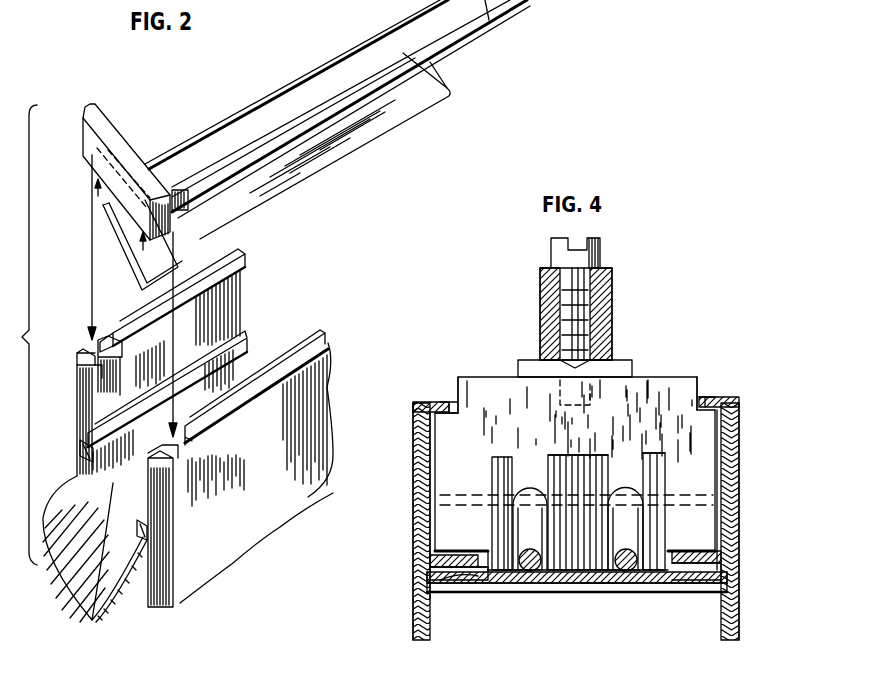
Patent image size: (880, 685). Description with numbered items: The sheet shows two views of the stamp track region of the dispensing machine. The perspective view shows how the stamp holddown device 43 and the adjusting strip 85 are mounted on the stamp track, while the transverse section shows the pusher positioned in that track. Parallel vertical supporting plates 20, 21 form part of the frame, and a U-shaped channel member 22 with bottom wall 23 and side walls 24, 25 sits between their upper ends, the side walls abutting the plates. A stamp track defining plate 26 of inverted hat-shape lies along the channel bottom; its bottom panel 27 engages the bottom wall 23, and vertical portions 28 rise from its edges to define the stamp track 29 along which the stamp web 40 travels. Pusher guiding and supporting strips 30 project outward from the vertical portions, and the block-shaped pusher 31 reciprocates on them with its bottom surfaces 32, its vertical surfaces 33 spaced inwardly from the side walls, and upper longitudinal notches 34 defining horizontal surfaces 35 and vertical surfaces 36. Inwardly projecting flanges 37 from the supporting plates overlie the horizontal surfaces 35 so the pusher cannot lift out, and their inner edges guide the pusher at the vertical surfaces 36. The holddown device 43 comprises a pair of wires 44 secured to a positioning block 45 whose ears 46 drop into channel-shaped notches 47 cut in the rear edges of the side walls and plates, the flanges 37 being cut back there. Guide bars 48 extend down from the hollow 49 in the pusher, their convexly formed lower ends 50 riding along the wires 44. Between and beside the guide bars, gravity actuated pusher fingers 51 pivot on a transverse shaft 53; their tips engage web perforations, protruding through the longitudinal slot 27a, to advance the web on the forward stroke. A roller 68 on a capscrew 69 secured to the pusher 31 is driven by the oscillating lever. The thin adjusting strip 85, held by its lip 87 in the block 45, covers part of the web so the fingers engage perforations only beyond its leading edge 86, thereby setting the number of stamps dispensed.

In FIG. 2, the supporting plate 20 is at (76, 402).
In FIG. 4, the supporting plate 20 is at (422, 548).
In FIG. 2, the supporting plate 21 is at (183, 592).
In FIG. 4, the supporting plate 21 is at (740, 522).
In FIG. 4, the U-shaped channel member 22 is at (512, 594).
In FIG. 4, the bottom wall 23 is at (548, 584).
In FIG. 4, the side wall 24 is at (432, 470).
In FIG. 4, the side wall 25 is at (739, 470).
In FIG. 4, the stamp track defining plate 26 is at (460, 582).
In FIG. 4, the bottom panel 27 is at (626, 582).
In FIG. 4, the longitudinal slot 27a is at (606, 584).
In FIG. 4, the vertical portions 28 is at (440, 580).
In FIG. 4, the stamp track 29 is at (486, 546).
In FIG. 4, the pusher guiding and supporting strips 30 is at (445, 566).
In FIG. 4, the stamp web feeder or pusher 31 is at (656, 368).
In FIG. 4, the bottom surfaces 32 is at (458, 548).
In FIG. 4, the vertically extending surfaces 33 is at (416, 448).
In FIG. 4, the upper longitudinal notches 34 is at (452, 393).
In FIG. 4, the horizontal surfaces 35 is at (447, 402).
In FIG. 4, the vertical surfaces 36 is at (455, 378).
In FIG. 2, the flanges 37 is at (238, 257).
In FIG. 4, the flanges 37 is at (418, 403).
In FIG. 4, the stamp web 40 is at (525, 584).
In FIG. 2, the stamp holddown device 43 is at (173, 138).
In FIG. 4, the holddown rods or wires 44 is at (490, 584).
In FIG. 2, the positioning block 45 is at (124, 132).
In FIG. 2, the ears 46 is at (88, 106).
In FIG. 2, the channel-shaped notches 47 is at (96, 360).
In FIG. 4, the guide bars 48 is at (540, 460).
In FIG. 4, the hollow 49 is at (658, 451).
In FIG. 4, the convexly formed lower ends 50 is at (545, 552).
In FIG. 4, the gravity actuated pusher fingers 51 is at (498, 456).
In FIG. 4, the transversely extending shaft 53 is at (626, 490).
In FIG. 4, the roller 68 is at (612, 307).
In FIG. 4, the capscrew 69 is at (603, 247).
In FIG. 2, the adjusting strip 85 is at (352, 152).
In FIG. 2, the leading edge 86 is at (440, 78).
In FIG. 2, the lip 87 is at (107, 224).